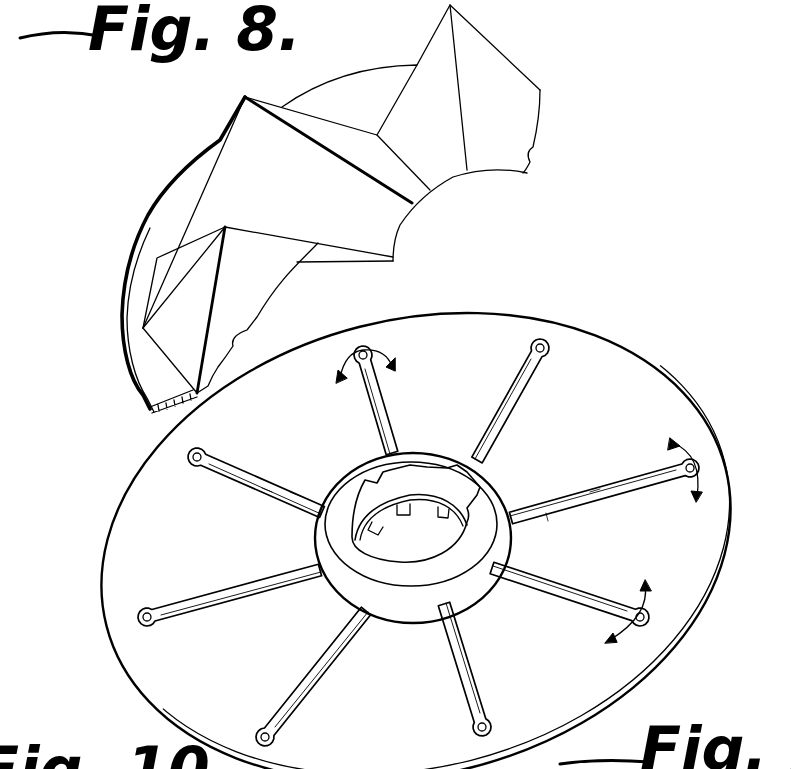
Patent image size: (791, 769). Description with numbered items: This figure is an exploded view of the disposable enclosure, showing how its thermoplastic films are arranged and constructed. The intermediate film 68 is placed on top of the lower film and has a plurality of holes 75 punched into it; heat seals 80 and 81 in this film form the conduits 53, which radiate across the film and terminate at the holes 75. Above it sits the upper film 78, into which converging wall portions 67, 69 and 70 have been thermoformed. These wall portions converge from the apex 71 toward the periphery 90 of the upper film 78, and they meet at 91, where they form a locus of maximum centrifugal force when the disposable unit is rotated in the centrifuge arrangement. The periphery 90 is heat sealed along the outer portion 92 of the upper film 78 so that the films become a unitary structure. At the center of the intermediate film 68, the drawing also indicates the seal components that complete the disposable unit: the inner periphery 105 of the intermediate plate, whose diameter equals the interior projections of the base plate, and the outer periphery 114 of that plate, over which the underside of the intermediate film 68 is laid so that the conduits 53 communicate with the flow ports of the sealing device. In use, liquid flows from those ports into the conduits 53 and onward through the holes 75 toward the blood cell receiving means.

The conduits 53 is at (637, 488).
The converging wall portion 67 is at (168, 290).
The intermediate film 68 is at (415, 749).
The converging wall portion 69 is at (428, 70).
The converging wall portion 70 is at (505, 87).
The apex 71 is at (224, 222).
The holes 75 is at (200, 448).
The upper film 78 is at (373, 115).
The heat seal 80 is at (300, 487).
The heat seal 81 is at (268, 492).
The periphery 90 is at (125, 333).
The convergence locus 91 is at (143, 328).
The outer portion 92 is at (178, 188).
The inner periphery 105 is at (433, 552).
The outer periphery 114 is at (457, 476).